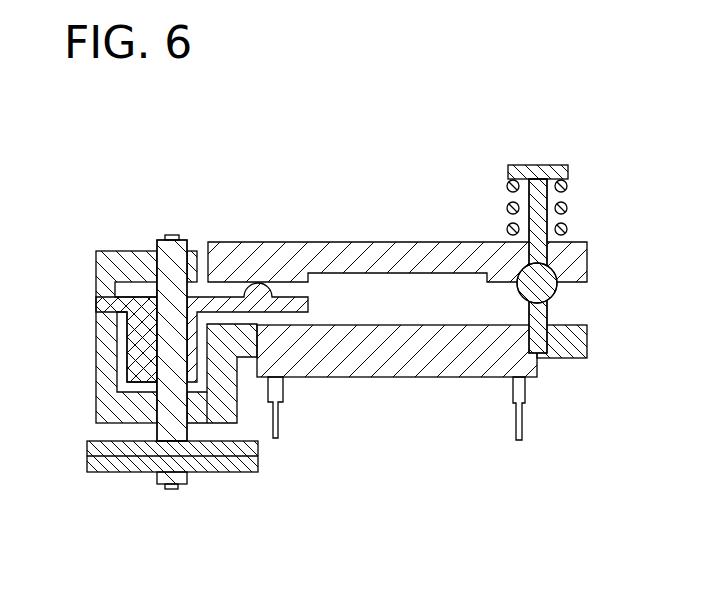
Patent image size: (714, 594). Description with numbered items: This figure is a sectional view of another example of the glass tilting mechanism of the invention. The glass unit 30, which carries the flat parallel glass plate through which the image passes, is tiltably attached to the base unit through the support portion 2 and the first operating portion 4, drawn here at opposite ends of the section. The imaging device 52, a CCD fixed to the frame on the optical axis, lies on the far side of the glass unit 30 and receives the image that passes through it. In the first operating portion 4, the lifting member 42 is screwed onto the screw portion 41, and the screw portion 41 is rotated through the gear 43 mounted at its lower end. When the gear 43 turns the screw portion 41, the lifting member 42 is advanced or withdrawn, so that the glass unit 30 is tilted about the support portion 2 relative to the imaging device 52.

The support portion 2 is at (605, 212).
The first operating portion 4 is at (82, 223).
The glass unit 30 is at (284, 242).
The screw portion 41 is at (187, 238).
The lifting member 42 is at (138, 350).
The gear 43 is at (213, 463).
The imaging device 52 is at (395, 368).